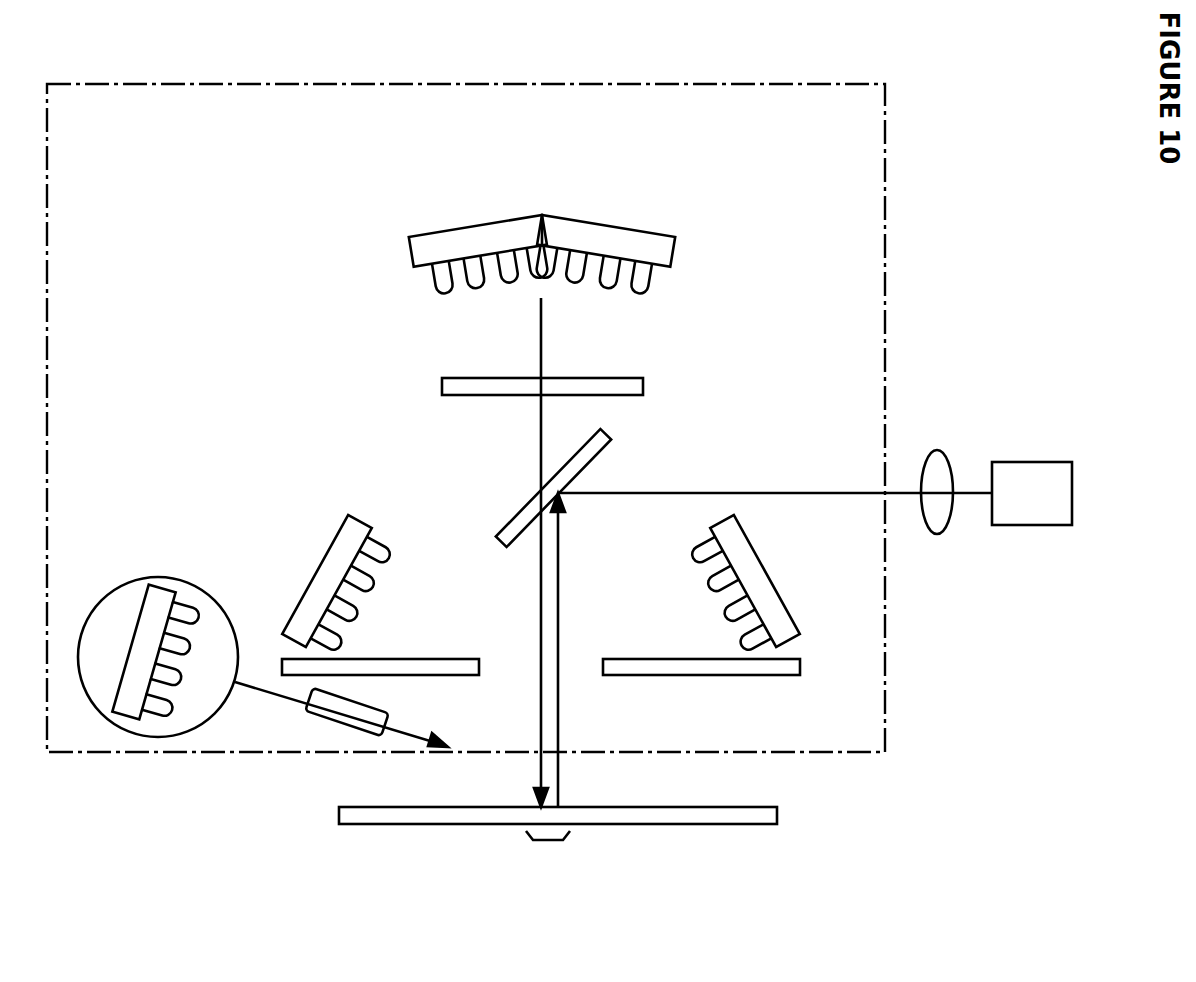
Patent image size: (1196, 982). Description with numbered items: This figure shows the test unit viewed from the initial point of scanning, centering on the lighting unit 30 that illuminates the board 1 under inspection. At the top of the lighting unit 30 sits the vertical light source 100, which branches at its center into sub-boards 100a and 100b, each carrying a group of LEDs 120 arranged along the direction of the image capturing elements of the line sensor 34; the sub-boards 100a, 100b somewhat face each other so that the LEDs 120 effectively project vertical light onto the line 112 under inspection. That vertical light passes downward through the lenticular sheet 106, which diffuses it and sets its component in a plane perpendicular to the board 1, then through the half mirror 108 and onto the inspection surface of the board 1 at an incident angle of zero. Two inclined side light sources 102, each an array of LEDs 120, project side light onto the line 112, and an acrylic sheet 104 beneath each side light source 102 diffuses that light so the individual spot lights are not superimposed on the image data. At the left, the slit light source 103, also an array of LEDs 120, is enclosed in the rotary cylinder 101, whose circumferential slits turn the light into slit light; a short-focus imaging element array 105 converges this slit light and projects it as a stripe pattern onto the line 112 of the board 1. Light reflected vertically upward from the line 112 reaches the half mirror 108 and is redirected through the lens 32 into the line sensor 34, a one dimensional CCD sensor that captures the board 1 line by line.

The board 1 is at (748, 824).
The lighting unit 30 is at (886, 118).
The lens 32 is at (942, 468).
The line sensor 34 is at (1043, 467).
The vertical light source 100 is at (542, 185).
The sub-board 100a is at (472, 238).
The sub-board 100b is at (606, 213).
The rotary cylinder 101 is at (110, 591).
The side light source 102 is at (352, 530).
The slit light source 103 is at (165, 595).
The acrylic sheet 104 is at (468, 676).
The short-focus imaging element array 105 is at (330, 727).
The lenticular sheet 106 is at (612, 383).
The half mirror 108 is at (600, 441).
The line under inspection 112 is at (548, 842).
The LEDs 120 is at (657, 280).